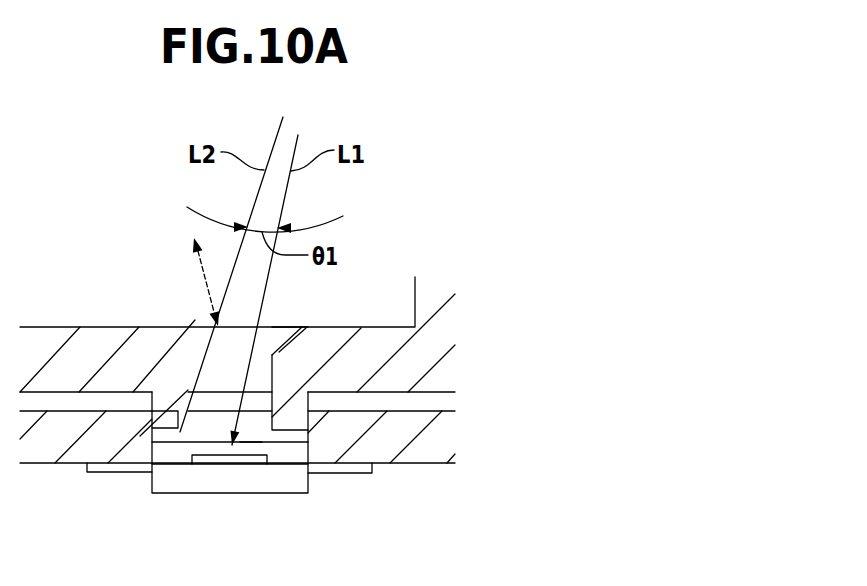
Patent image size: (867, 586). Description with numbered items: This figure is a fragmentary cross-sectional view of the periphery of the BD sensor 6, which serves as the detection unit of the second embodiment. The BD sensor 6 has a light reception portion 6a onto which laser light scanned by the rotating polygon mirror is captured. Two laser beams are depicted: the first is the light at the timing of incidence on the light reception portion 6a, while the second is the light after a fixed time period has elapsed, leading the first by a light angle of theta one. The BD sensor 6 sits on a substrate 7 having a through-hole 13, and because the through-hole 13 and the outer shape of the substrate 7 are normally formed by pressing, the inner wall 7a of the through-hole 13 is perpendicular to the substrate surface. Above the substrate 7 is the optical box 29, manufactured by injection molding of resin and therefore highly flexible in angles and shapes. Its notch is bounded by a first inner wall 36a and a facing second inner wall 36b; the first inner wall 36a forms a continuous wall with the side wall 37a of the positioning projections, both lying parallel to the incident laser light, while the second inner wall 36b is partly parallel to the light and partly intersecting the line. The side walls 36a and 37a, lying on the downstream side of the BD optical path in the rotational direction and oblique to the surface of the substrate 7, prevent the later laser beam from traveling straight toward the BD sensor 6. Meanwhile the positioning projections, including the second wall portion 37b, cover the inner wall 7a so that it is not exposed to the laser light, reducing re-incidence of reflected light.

The optical box 29 is at (403, 363).
The side wall 37a is at (183, 440).
The second wall portion 37b is at (270, 440).
The BD sensor 6 is at (198, 485).
The light reception portion 6a is at (238, 467).
The through-hole 13 is at (250, 443).
The substrate 7 is at (423, 450).
The inner wall 7a is at (140, 436).
The first inner wall 36a is at (198, 393).
The second inner wall 36b is at (283, 327).